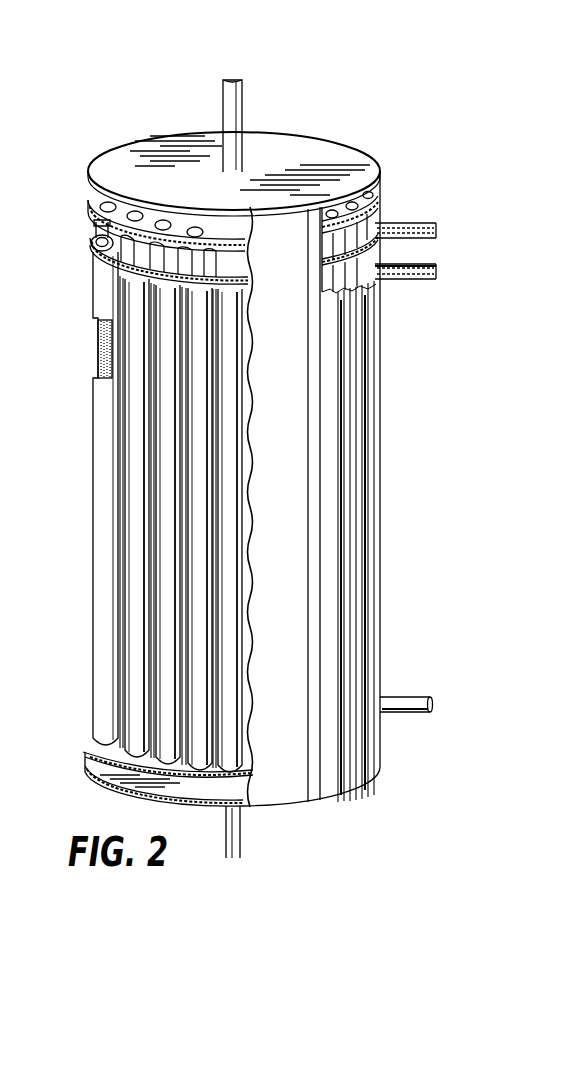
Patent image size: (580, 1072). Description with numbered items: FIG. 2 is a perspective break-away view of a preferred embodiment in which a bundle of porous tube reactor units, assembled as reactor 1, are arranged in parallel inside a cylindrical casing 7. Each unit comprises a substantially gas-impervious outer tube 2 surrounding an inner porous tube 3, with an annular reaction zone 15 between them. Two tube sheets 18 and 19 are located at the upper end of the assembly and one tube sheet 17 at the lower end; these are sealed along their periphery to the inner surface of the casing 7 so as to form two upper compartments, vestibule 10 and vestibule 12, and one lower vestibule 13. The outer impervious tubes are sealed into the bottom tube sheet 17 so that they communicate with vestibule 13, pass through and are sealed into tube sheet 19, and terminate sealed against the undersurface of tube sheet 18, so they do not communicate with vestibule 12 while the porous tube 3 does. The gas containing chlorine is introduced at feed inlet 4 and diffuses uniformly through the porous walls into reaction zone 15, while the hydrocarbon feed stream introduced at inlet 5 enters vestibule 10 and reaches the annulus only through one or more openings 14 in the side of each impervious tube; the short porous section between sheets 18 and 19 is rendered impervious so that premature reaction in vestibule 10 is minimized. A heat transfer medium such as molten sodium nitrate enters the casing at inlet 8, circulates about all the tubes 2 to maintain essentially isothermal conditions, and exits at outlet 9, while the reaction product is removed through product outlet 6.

The top cover plate 1 is at (308, 130).
The outer tube 2 is at (92, 440).
The inner porous tube 3 is at (112, 208).
The feed inlet 4 is at (231, 82).
The inlet 5 is at (437, 234).
The product outlet 6 is at (228, 852).
The casing 7 is at (382, 437).
The inlet 8 is at (427, 706).
The outlet 9 is at (438, 275).
The vestibule 10 is at (112, 262).
The vestibule 12 is at (86, 196).
The vestibule 13 is at (94, 766).
The opening 14 is at (95, 236).
The reaction zone 15 is at (96, 368).
The tube sheet 17 is at (98, 748).
The tube sheet 18 is at (94, 222).
The tube sheet 19 is at (100, 252).